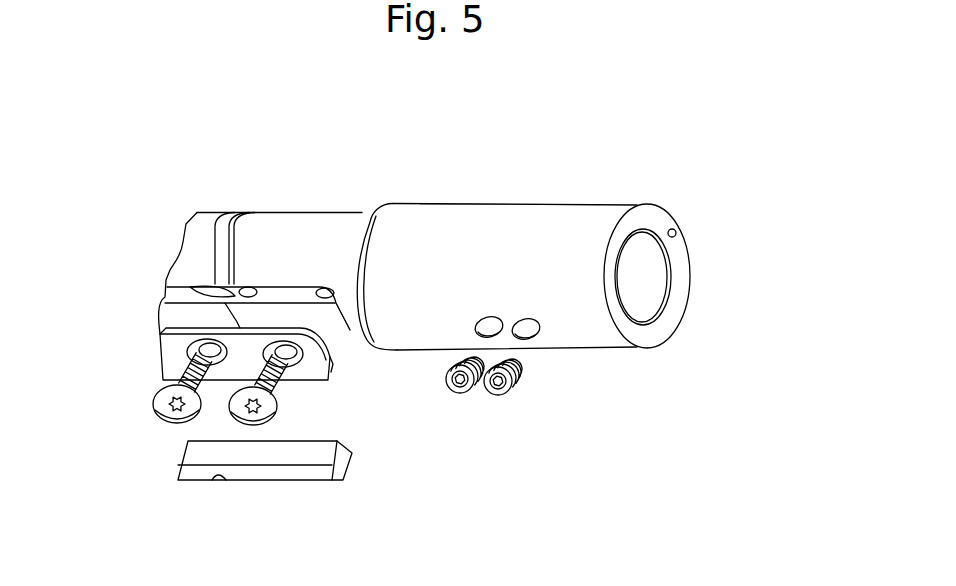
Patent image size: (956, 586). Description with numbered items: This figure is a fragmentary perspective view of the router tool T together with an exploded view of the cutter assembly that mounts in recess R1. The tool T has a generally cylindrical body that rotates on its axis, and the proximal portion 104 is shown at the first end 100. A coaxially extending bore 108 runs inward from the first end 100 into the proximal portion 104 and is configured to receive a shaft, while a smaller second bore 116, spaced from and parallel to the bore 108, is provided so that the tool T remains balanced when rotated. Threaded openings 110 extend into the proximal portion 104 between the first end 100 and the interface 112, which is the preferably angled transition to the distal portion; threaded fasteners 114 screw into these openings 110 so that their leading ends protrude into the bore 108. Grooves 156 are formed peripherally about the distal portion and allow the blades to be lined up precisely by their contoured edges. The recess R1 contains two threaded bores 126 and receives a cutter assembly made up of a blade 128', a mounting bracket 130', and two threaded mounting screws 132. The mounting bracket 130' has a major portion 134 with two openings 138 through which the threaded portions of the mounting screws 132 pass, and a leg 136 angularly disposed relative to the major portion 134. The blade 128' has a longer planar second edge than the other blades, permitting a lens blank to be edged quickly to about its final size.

The tool T is at (513, 139).
The first end 100 is at (660, 335).
The proximal portion 104 is at (529, 240).
The bore 108 is at (666, 280).
The threaded openings 110 is at (534, 332).
The interface 112 is at (358, 212).
The threaded fasteners 114 is at (473, 390).
The second bore 116 is at (688, 232).
The threaded bore 126 is at (195, 290).
The blade 128' is at (265, 483).
The mounting bracket 130' is at (229, 370).
The threaded mounting screw 132 is at (180, 418).
The major portion 134 is at (193, 352).
The leg 136 is at (333, 375).
The opening 138 is at (295, 360).
The grooves 156 is at (260, 203).
The recess R1 is at (346, 352).